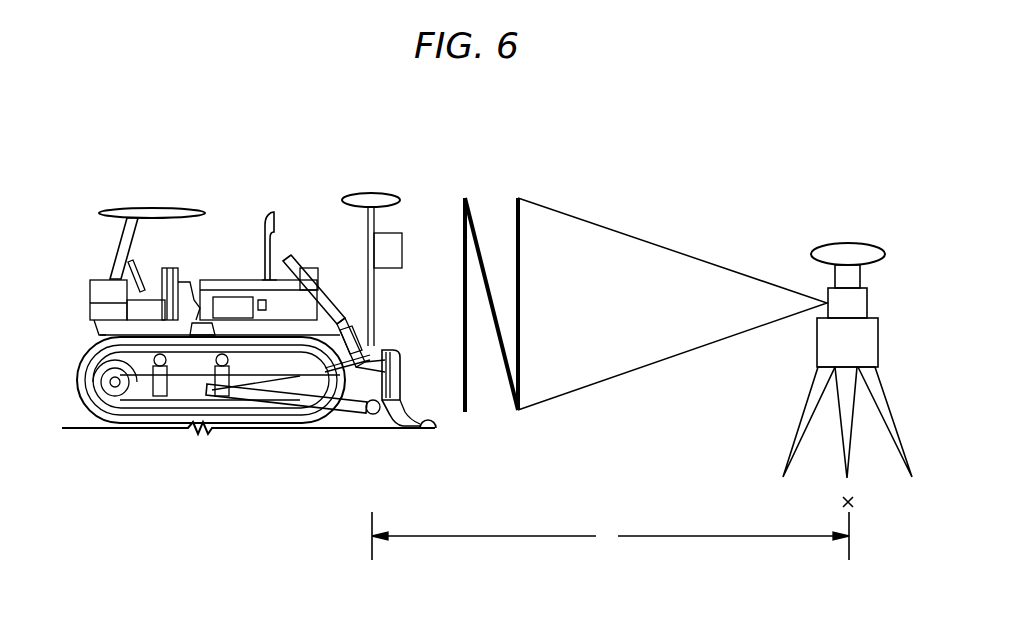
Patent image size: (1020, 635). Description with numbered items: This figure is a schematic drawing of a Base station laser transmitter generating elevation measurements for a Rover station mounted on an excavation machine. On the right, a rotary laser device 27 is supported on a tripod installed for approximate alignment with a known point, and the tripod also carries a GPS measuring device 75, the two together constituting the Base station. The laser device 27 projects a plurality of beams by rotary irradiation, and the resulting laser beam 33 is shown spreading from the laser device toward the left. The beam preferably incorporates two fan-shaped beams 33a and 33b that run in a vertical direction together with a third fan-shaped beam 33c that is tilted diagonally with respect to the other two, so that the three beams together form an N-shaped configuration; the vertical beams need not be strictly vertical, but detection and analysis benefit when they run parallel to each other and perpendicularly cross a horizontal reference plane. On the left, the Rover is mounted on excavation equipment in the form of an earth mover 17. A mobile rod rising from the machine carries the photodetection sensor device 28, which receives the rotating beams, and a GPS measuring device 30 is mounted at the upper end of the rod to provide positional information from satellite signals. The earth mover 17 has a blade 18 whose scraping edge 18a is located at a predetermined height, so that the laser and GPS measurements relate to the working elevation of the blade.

The earth mover 17 is at (238, 216).
The blade 18 is at (403, 388).
The scraping edge 18a is at (428, 429).
The rotary laser device 27 is at (812, 345).
The photodetection sensor device 28 is at (404, 233).
The GPS measuring device 30 is at (372, 194).
The laser beam 33 is at (664, 234).
The fan-shaped beam 33a is at (520, 286).
The fan-shaped beam 33b is at (463, 305).
The fan-shaped beam 33c is at (470, 221).
The GPS measuring device 75 is at (848, 243).